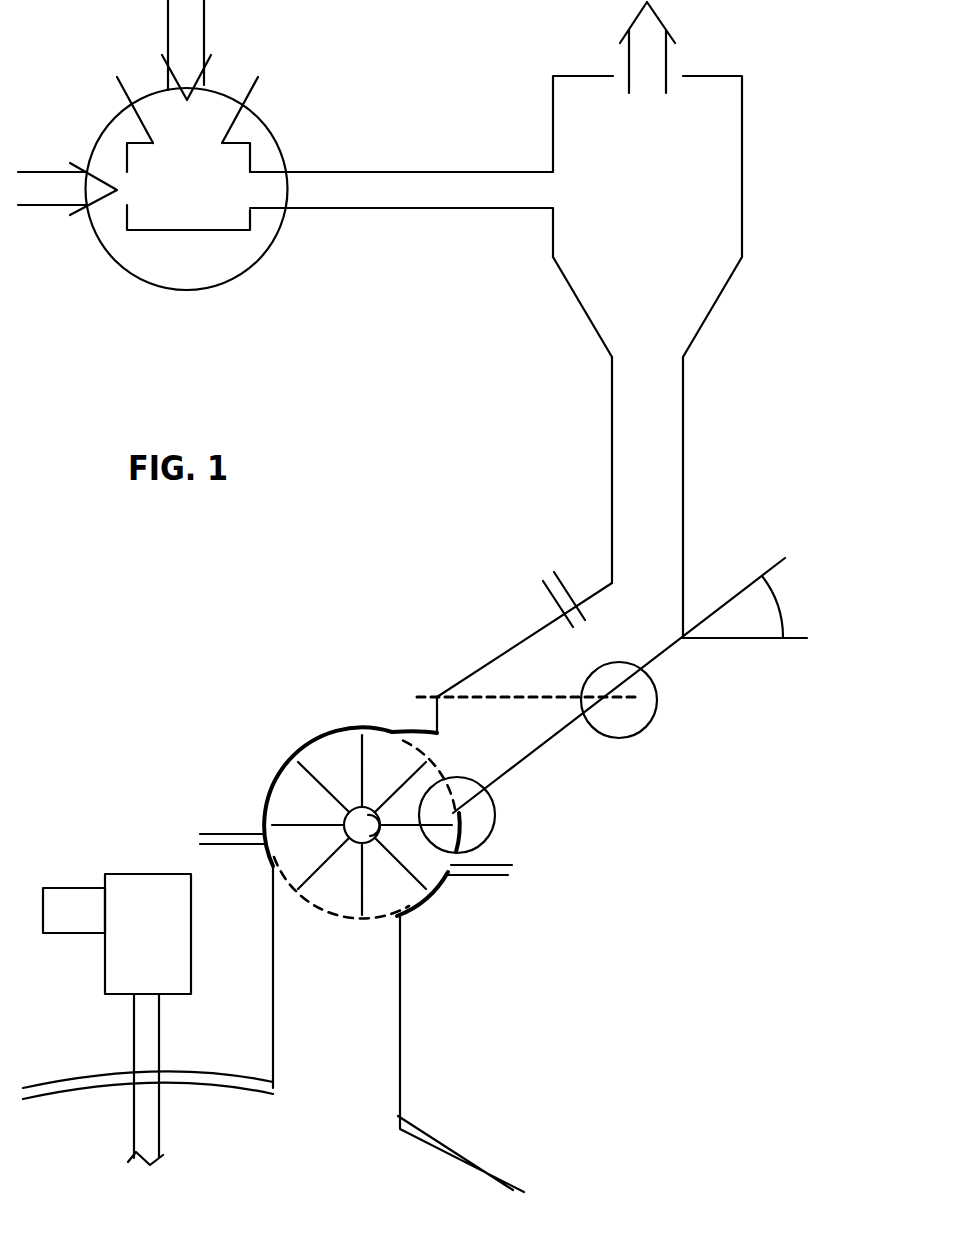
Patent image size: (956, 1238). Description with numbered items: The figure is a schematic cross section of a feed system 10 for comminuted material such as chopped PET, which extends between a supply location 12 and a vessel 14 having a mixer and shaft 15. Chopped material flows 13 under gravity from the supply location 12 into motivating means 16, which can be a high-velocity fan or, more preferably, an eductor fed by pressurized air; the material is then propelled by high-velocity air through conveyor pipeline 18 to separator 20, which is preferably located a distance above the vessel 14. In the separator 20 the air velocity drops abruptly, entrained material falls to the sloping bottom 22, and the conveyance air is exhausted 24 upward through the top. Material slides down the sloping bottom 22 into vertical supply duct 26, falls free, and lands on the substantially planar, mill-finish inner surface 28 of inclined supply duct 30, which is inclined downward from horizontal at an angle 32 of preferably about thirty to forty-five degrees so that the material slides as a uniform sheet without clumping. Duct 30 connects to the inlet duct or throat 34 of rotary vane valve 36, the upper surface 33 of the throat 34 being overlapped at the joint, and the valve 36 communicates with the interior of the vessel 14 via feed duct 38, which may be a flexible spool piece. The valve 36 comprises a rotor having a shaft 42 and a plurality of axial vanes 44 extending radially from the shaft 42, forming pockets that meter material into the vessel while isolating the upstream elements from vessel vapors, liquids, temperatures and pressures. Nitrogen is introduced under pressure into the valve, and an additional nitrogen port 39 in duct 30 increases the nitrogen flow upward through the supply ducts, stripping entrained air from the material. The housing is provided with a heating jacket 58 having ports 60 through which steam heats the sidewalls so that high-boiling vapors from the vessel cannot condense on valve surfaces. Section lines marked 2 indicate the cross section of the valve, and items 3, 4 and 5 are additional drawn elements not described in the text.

The section line 2- 2 is at (285, 750).
The roller 3 is at (495, 810).
The roller 4 is at (657, 694).
The diverter valve 5 is at (272, 131).
The feed system 10 is at (522, 460).
The supply location 12 is at (148, 18).
The flow of chopped material 13 is at (186, 92).
The vessel 14 is at (473, 1160).
The mixer and shaft 15 is at (104, 854).
The motivating means 16 is at (188, 233).
The conveyor pipeline 18 is at (455, 208).
The separator 20 is at (698, 150).
The sloping bottom 22 is at (690, 330).
The exhaust 24 is at (606, 23).
The vertical supply duct 26 is at (658, 478).
The inner surface 28 is at (648, 665).
The inclined supply duct 30 is at (545, 656).
The angle 32 is at (780, 605).
The upper surface of throat 33 is at (498, 767).
The inlet duct or throat 34 is at (542, 718).
The rotary vane valve 36 is at (244, 772).
The feed duct 38 is at (362, 1032).
The nitrogen port 39 is at (547, 578).
The shaft 42 is at (368, 812).
The axial vanes 44 is at (360, 883).
The heating jacket 58 is at (261, 854).
The ports 60 is at (200, 834).